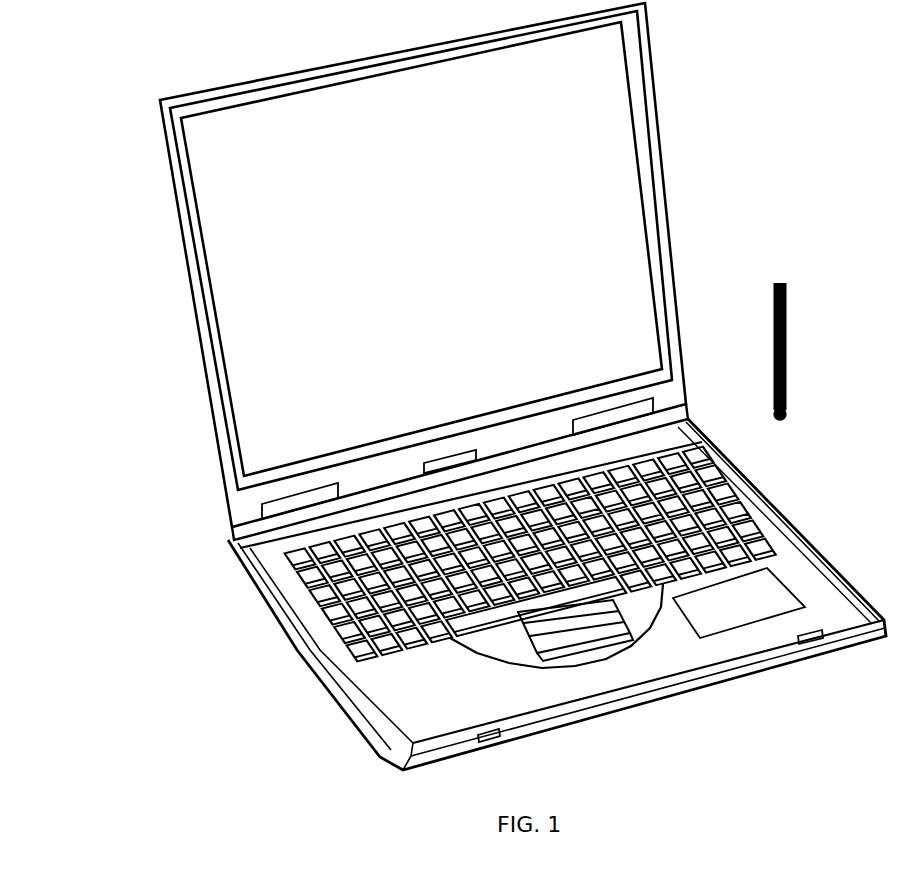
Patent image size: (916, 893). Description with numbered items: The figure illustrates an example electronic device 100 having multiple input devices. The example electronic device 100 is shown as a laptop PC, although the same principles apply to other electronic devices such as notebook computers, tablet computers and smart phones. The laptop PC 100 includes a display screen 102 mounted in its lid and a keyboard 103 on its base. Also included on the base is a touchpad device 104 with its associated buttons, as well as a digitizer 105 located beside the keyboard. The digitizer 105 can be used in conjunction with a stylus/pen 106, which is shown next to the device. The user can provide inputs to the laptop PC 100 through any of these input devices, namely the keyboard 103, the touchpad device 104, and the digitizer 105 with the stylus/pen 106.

The electronic device 100 is at (110, 152).
The display screen 102 is at (597, 170).
The keyboard 103 is at (310, 598).
The touchpad device 104 is at (598, 628).
The digitizer 105 is at (763, 598).
The stylus/pen 106 is at (805, 307).